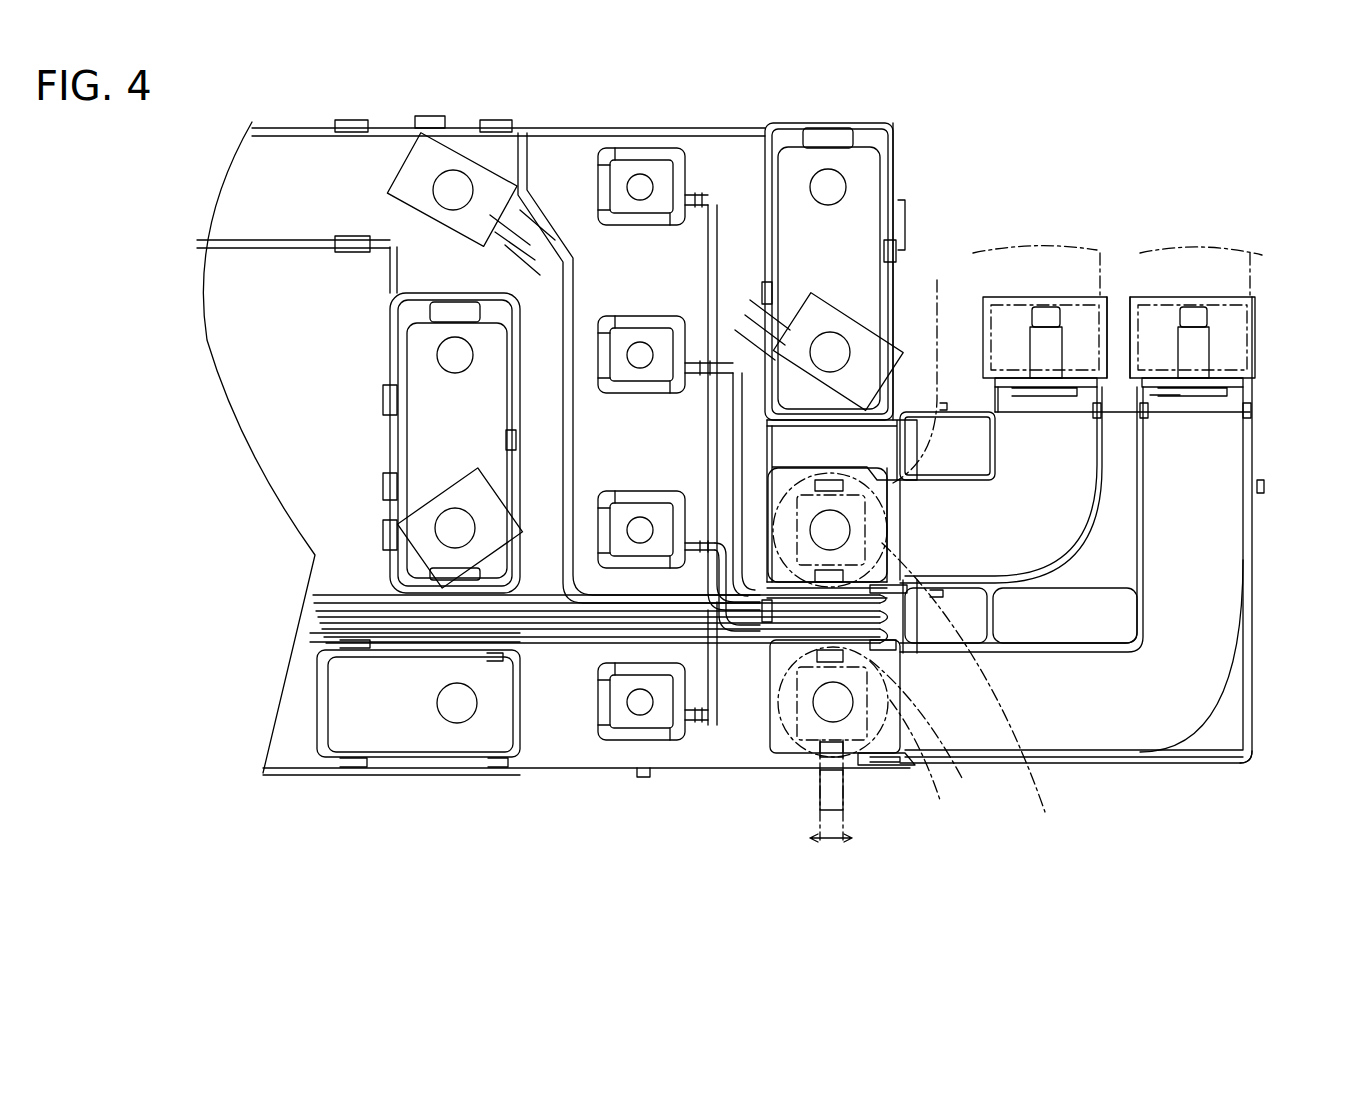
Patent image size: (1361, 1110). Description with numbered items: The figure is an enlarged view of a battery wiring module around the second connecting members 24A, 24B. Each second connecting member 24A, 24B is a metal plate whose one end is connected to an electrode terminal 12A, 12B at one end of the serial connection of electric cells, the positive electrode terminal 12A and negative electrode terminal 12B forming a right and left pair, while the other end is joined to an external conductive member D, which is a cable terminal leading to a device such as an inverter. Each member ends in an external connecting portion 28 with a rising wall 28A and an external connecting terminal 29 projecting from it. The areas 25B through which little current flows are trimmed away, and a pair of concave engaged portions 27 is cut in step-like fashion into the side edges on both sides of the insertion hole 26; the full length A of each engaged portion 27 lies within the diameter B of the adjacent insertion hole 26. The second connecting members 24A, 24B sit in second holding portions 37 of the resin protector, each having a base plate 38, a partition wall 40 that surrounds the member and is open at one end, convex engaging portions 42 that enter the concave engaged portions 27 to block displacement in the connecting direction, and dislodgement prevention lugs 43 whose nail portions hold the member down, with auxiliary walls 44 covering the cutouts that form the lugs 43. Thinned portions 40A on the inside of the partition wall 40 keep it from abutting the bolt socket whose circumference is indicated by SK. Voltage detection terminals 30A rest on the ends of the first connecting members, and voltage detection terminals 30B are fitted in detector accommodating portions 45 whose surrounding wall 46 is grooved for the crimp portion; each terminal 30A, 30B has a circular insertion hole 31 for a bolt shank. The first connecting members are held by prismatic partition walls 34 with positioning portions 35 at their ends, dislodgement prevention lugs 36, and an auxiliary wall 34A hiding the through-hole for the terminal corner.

The electrode terminal 12A is at (928, 767).
The electrode terminal 12B is at (927, 366).
The second connecting member 24A is at (1070, 420).
The second connecting member 24B is at (1207, 655).
The area through which relatively little electric current flows 25B is at (775, 640).
The insertion hole 26 is at (880, 652).
The concave engaged portion 27 is at (838, 480).
The external connecting portion 28 is at (1060, 185).
The rising wall 28A is at (998, 362).
The external connecting terminal 29 is at (1052, 325).
The voltage detection terminal 30A is at (810, 300).
The voltage detection terminal 30B is at (658, 165).
The insertion hole 31 is at (380, 355).
The partition wall 34 is at (862, 125).
The auxiliary wall 34A is at (430, 118).
The positioning portion 35 is at (465, 310).
The dislodgement prevention lug 36 is at (888, 250).
The second holding portion 37 is at (958, 395).
The base plate 38 is at (1222, 740).
The partition wall 40 is at (1100, 517).
The thinned portion 40A is at (830, 700).
The convex engaging portion 42 is at (767, 282).
The dislodgement prevention lug 43 is at (1251, 416).
The auxiliary wall 44 is at (885, 765).
The detector accommodating portion 45 is at (590, 205).
The surrounding wall 46 is at (683, 152).
The full length of engaged recess portion A is at (831, 790).
The diameter of insertion hole B is at (831, 829).
The external conductive member D is at (1100, 270).
The circumference of socket SK is at (968, 691).